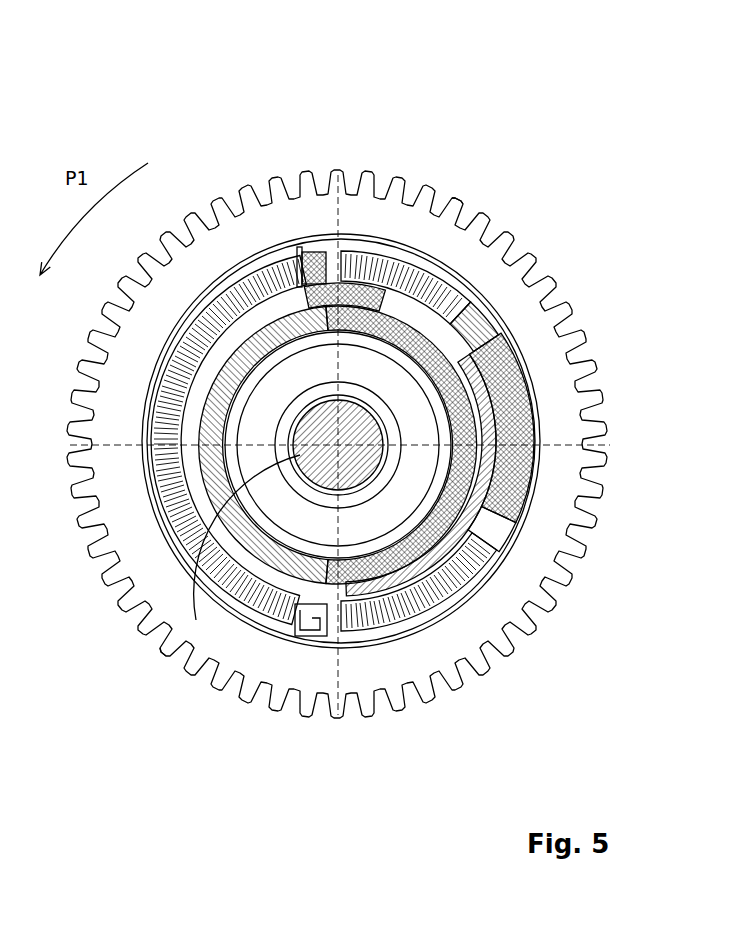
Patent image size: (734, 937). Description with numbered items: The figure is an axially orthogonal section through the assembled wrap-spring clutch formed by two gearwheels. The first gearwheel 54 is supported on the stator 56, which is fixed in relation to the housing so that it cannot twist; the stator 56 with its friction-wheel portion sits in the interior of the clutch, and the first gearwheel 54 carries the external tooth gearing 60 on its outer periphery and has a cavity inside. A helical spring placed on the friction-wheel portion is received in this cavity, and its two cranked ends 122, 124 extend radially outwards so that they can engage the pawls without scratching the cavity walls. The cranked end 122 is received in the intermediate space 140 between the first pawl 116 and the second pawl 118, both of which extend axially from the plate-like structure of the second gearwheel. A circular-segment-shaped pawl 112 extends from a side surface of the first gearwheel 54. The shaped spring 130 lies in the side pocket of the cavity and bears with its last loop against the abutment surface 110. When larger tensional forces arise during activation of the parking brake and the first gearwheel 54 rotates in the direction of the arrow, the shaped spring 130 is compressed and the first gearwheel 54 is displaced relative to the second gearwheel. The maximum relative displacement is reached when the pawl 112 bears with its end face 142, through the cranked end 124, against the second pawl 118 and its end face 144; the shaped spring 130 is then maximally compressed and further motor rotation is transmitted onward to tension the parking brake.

The first gearwheel 54 is at (246, 236).
The stator 56 is at (178, 632).
The external tooth gearing 60 is at (507, 260).
The abutment surface 110 is at (500, 557).
The circular-segment-shaped pawl 112 is at (197, 648).
The first pawl 116 is at (410, 260).
The second pawl 118 is at (447, 592).
The cranked end 122 is at (306, 255).
The cranked end 124 is at (340, 645).
The shaped spring 130 is at (523, 370).
The intermediate space 140 is at (330, 262).
The end face 142 is at (306, 640).
The end face 144 is at (347, 645).